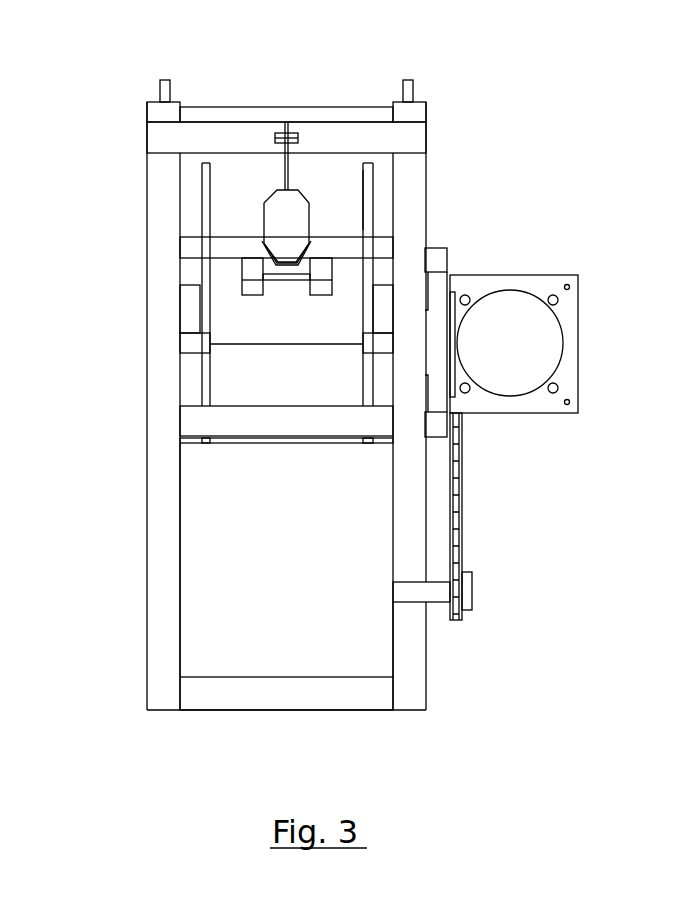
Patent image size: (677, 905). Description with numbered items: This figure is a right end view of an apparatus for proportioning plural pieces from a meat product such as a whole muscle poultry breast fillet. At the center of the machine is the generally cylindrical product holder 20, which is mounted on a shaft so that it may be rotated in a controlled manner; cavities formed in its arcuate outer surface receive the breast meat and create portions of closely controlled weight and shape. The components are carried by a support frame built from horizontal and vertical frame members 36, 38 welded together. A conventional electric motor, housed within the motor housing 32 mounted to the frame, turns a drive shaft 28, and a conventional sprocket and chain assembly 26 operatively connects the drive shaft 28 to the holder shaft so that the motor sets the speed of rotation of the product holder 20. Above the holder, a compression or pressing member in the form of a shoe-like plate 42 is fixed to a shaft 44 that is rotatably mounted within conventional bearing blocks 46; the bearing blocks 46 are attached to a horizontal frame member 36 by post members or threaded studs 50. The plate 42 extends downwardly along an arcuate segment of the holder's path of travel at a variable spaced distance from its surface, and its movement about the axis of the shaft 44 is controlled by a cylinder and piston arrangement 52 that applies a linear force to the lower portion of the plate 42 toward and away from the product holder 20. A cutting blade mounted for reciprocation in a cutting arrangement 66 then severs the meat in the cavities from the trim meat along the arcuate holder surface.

The product holder 20 is at (290, 382).
The sprocket and chain assembly 26 is at (477, 517).
The drive shaft 28 is at (437, 603).
The motor housing 32 is at (303, 551).
The horizontal frame member 36 is at (302, 677).
The vertical frame member 38 is at (147, 587).
The shoe-like plate 42 is at (363, 185).
The shaft 44 is at (243, 107).
The bearing blocks 46 is at (148, 107).
The post members 50 is at (169, 80).
The cylinder and piston arrangement 52 is at (252, 207).
The cutting arrangement 66 is at (592, 322).